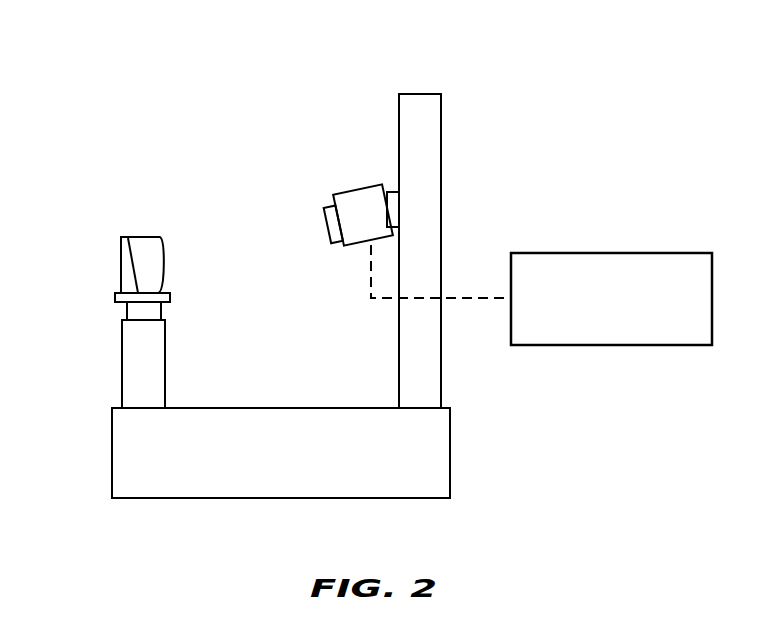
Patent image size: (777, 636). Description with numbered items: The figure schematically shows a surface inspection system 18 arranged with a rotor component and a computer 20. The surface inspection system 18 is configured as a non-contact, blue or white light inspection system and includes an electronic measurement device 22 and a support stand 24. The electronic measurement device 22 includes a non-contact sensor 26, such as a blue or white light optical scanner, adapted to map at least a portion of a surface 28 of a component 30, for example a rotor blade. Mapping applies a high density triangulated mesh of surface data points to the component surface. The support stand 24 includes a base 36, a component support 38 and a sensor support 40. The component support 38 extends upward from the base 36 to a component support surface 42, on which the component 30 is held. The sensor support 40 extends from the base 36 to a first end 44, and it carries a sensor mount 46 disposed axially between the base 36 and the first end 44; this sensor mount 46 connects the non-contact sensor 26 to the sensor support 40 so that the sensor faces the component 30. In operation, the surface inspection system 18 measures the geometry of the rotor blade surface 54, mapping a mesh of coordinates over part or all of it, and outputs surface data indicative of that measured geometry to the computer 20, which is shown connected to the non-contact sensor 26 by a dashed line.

The surface inspection system 18 is at (475, 123).
The computer 20 is at (672, 253).
The electronic measurement device 22 is at (322, 188).
The support stand 24 is at (487, 465).
The non-contact sensor 26 is at (303, 181).
The surface 28 is at (165, 267).
The component 30 is at (199, 217).
The base 36 is at (200, 498).
The component support 38 is at (122, 372).
The sensor support 40 is at (441, 373).
The component support surface 42 is at (127, 312).
The first end 44 is at (422, 93).
The sensor mount 46 is at (392, 192).
The surface 54 is at (206, 265).